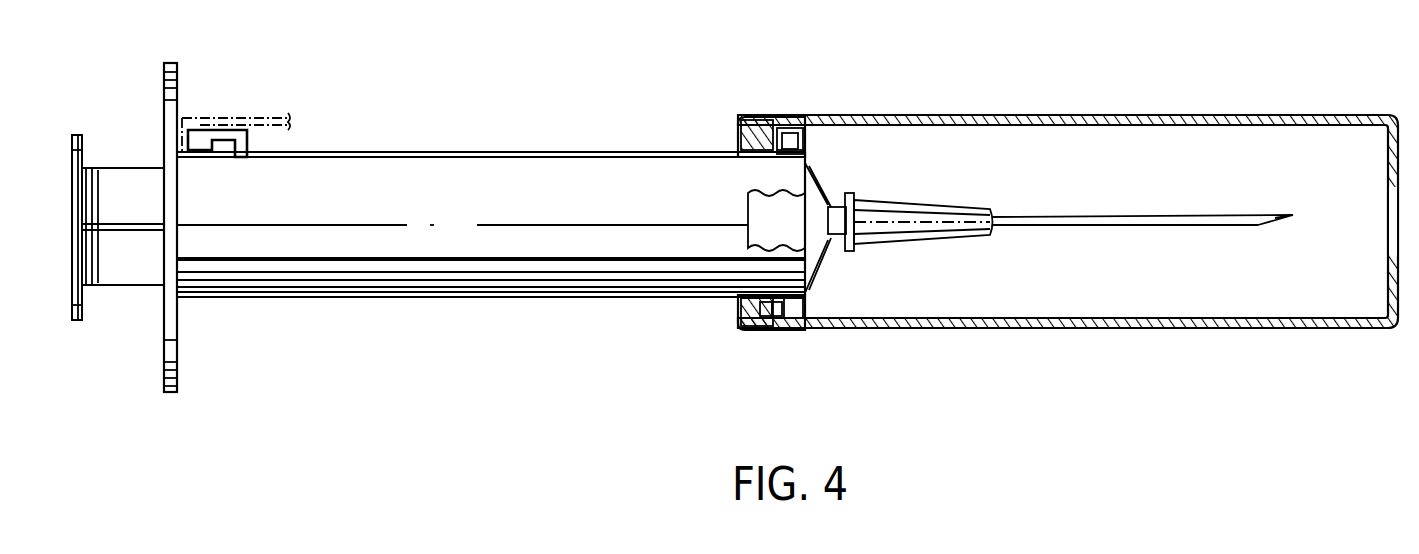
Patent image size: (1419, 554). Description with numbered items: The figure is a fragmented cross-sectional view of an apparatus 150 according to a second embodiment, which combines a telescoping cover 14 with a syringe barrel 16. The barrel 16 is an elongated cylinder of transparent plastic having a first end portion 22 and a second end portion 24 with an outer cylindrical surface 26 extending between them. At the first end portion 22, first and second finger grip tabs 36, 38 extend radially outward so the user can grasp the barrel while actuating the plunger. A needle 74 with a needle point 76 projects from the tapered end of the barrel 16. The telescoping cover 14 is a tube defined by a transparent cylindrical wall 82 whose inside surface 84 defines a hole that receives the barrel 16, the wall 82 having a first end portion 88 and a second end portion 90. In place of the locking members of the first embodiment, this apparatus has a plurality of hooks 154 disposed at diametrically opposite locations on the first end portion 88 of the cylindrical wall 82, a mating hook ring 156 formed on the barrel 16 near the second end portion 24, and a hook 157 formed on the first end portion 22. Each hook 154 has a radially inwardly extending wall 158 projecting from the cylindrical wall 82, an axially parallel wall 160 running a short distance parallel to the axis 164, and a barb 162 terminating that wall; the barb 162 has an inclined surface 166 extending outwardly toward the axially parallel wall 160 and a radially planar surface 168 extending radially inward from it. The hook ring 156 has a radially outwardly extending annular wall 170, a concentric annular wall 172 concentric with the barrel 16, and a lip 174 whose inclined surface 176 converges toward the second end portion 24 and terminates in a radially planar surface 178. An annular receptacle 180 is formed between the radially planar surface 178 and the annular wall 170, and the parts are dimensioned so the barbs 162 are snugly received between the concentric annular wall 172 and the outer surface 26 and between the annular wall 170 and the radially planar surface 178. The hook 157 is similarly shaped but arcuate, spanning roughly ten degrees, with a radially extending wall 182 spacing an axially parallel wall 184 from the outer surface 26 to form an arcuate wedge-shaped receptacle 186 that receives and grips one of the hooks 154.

The telescoping cover 14 is at (1068, 196).
The barrel 16 is at (410, 150).
The first end portion 22 is at (226, 240).
The second end portion 24 is at (725, 268).
The outer cylindrical surface 26 is at (480, 168).
The first finger grip tab 36 is at (170, 62).
The second finger grip tab 38 is at (165, 347).
The needle 74 is at (1140, 213).
The needle point 76 is at (1280, 212).
The cylindrical wall 82 is at (998, 117).
The inside surface 84 is at (1158, 127).
The first end portion 88 is at (880, 116).
The second end portion 90 is at (782, 181).
The apparatus 150 is at (545, 104).
The hooks 154 is at (576, 240).
The hook ring 156 is at (740, 323).
The hook 157 is at (242, 118).
The radially inwardly extending wall 158 is at (740, 142).
The axially parallel wall 160 is at (775, 153).
The barb 162 is at (800, 152).
The axis 164 is at (556, 222).
The inclined surface 166 is at (786, 140).
The radially planar surface 168 is at (776, 140).
The radially outwardly extending annular wall 170 is at (832, 298).
The concentric annular wall 172 is at (830, 300).
The lip 174 is at (763, 312).
The inclined surface 176 is at (776, 310).
The radially planar surface 178 is at (745, 303).
The annular receptacle 180 is at (770, 318).
The radially extending wall 182 is at (288, 143).
The axially parallel wall 184 is at (210, 130).
The arcuate wedge-shaped receptacle 186 is at (217, 157).